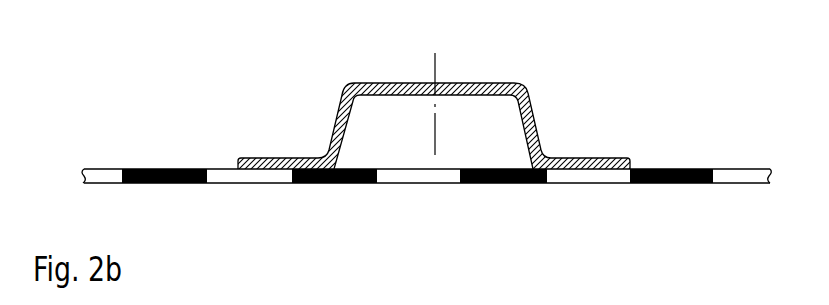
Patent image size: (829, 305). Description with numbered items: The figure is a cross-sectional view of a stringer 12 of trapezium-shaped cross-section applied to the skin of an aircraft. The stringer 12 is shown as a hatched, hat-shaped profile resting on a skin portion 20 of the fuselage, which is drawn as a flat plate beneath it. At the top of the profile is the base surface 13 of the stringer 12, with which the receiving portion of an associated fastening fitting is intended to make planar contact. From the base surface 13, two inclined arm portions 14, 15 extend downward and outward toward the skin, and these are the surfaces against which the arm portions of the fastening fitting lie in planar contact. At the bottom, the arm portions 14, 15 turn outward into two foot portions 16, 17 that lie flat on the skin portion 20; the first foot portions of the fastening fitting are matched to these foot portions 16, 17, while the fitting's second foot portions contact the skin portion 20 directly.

The stringer 12 is at (539, 90).
The base surface 13 is at (460, 82).
The arm portion 14 is at (538, 122).
The arm portion 15 is at (337, 117).
The foot portion 16 is at (612, 159).
The foot portion 17 is at (254, 163).
The skin portion 20 is at (395, 177).